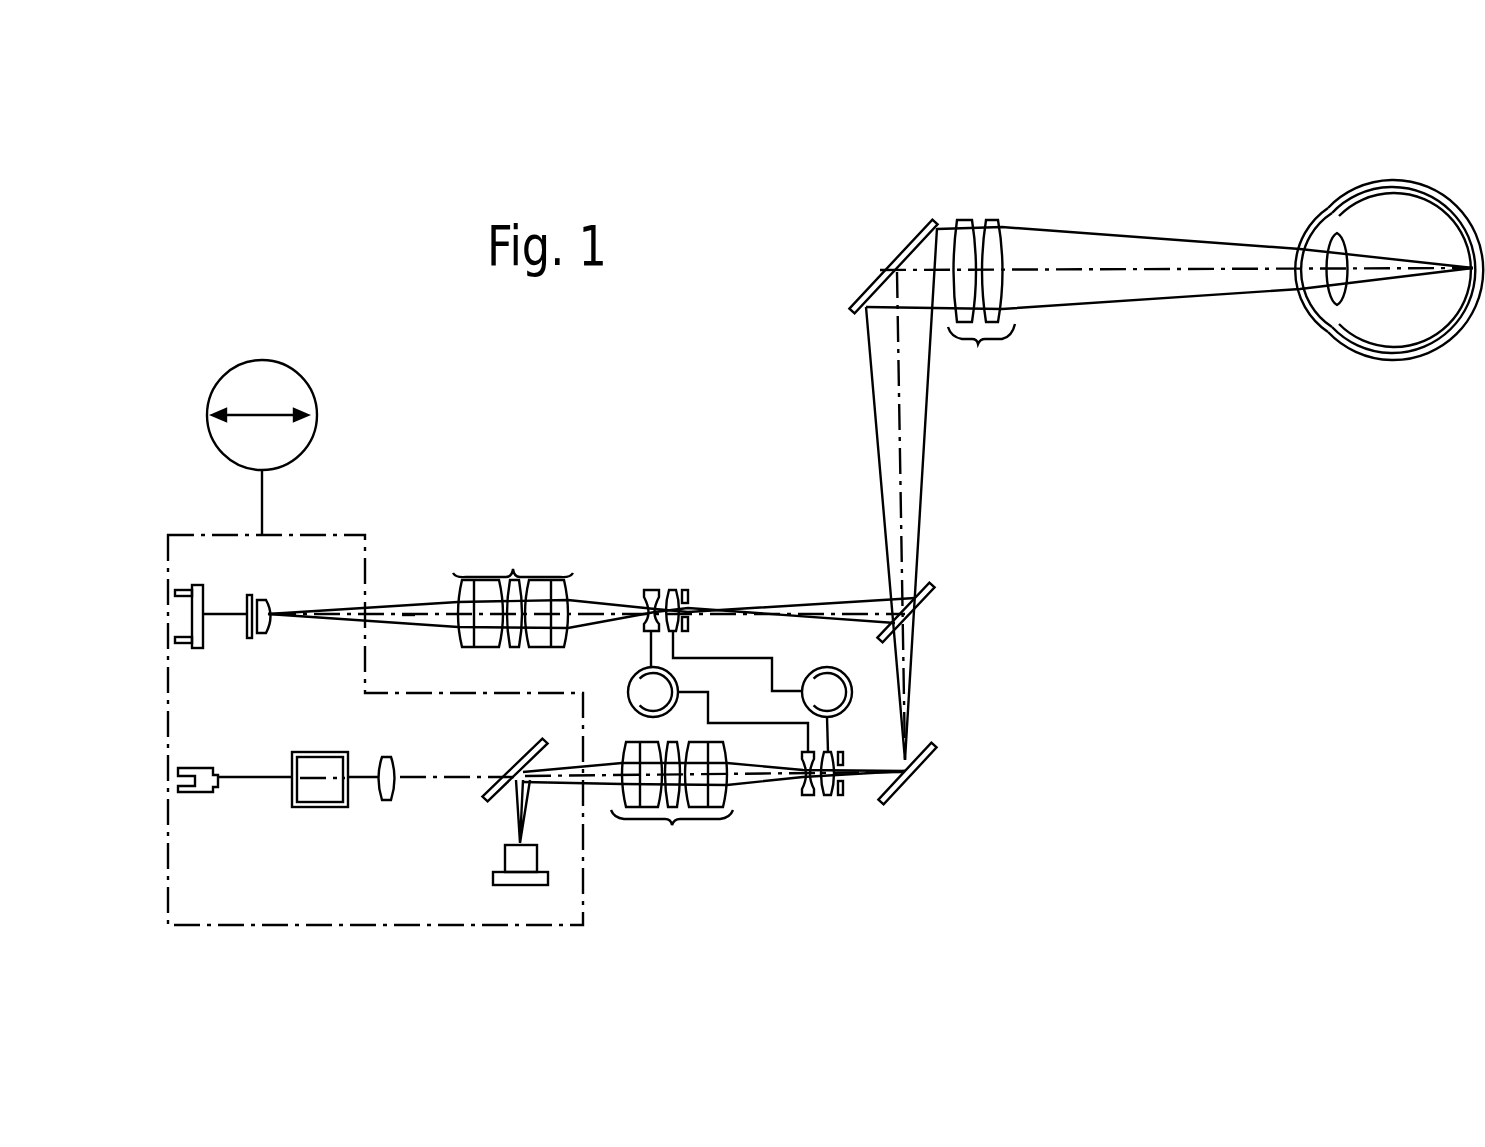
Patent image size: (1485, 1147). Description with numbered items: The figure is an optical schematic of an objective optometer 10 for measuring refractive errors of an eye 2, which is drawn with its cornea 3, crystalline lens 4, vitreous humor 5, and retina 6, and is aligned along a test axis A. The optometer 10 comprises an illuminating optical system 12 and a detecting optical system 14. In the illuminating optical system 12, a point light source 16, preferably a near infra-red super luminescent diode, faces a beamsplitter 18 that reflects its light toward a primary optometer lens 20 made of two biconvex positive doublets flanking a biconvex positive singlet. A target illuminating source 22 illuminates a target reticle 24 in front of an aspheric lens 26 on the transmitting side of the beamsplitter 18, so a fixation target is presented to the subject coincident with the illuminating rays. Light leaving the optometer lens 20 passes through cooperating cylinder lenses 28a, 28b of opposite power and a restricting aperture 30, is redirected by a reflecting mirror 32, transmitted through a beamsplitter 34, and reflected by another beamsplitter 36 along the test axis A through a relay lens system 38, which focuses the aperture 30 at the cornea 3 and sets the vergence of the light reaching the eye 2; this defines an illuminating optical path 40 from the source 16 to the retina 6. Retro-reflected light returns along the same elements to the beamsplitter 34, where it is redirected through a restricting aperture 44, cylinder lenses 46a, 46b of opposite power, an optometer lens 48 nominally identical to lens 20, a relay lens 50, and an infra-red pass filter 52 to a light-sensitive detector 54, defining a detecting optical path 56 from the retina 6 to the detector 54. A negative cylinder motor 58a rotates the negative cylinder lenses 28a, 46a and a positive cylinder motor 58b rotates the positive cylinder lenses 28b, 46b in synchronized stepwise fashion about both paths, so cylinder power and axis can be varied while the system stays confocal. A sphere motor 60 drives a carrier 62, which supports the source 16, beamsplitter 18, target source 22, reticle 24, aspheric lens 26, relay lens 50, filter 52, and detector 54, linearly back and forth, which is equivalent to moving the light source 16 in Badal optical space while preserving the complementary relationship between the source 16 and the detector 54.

The eye 2 is at (1365, 254).
The cornea 3 is at (1306, 300).
The crystalline lens 4 is at (1345, 238).
The vitreous humor 5 is at (1418, 328).
The retina 6 is at (1473, 260).
The test axis A is at (1163, 267).
The objective optometer 10 is at (1097, 722).
The illuminating optical system 12 is at (677, 883).
The detecting optical system 14 is at (585, 552).
The point light source 16 is at (505, 856).
The beamsplitter 18 is at (537, 746).
The primary optometer lens 20 is at (672, 798).
The target illuminating source 22 is at (200, 793).
The target reticle 24 is at (318, 752).
The aspheric lens 26 is at (386, 802).
The negative cylinder lens 28a is at (808, 797).
The positive cylinder lens 28b is at (830, 797).
The restricting aperture 30 is at (846, 750).
The reflecting mirror 32 is at (935, 758).
The beamsplitter 34 is at (932, 600).
The beamsplitter 36 is at (892, 258).
The relay lens system 38 is at (981, 302).
The illuminating optical path 40 is at (597, 778).
The restricting aperture 44 is at (690, 595).
The negative cylinder lens 46a is at (651, 588).
The positive cylinder lens 46b is at (675, 588).
The optometer lens 48 is at (513, 591).
The relay lens 50 is at (270, 600).
The infra-red pass filter 52 is at (250, 594).
The light-sensitive detector 54 is at (205, 640).
The detecting optical path 56 is at (408, 612).
The negative cylinder motor 58a is at (636, 674).
The positive cylinder motor 58b is at (836, 670).
The sphere motor 60 is at (306, 380).
The carrier 62 is at (325, 533).